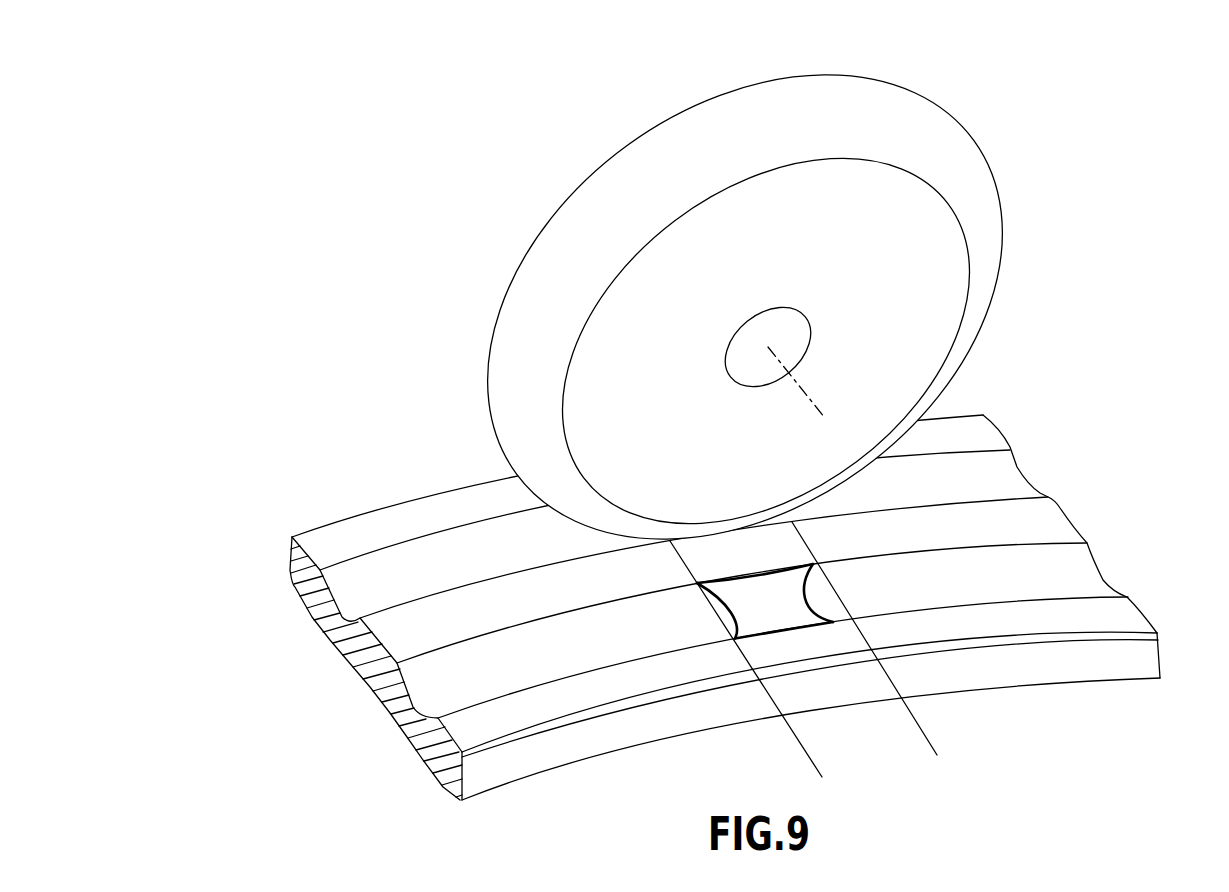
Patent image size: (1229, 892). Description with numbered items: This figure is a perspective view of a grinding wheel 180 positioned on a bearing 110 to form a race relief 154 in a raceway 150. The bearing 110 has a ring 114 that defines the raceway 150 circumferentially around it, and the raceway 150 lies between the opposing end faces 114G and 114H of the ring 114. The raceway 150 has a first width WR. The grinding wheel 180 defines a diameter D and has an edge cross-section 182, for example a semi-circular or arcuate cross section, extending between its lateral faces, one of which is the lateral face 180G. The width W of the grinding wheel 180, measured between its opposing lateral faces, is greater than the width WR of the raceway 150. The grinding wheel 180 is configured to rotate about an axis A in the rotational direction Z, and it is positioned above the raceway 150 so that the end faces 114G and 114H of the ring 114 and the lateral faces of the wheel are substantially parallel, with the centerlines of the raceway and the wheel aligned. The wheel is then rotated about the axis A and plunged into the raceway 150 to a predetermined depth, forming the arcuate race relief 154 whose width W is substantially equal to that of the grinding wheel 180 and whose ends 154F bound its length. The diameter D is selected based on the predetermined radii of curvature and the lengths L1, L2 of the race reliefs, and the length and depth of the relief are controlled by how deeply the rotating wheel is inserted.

The bearing 110 is at (698, 596).
The ring 114 is at (701, 555).
The end face 114G is at (1117, 655).
The end face 114H is at (290, 560).
The raceway 150 is at (403, 572).
The race relief 154 is at (817, 681).
The relief end faces 154F is at (768, 610).
The grinding wheel 180 is at (744, 317).
The lateral face 180G is at (630, 398).
The edge cross-section 182 is at (623, 200).
The axis A is at (803, 388).
The diameter D is at (838, 72).
The rotation direction Z is at (1024, 221).
The width W is at (809, 660).
The width of the raceway WR is at (463, 531).
The length L1 is at (803, 659).
The length L2 is at (910, 723).